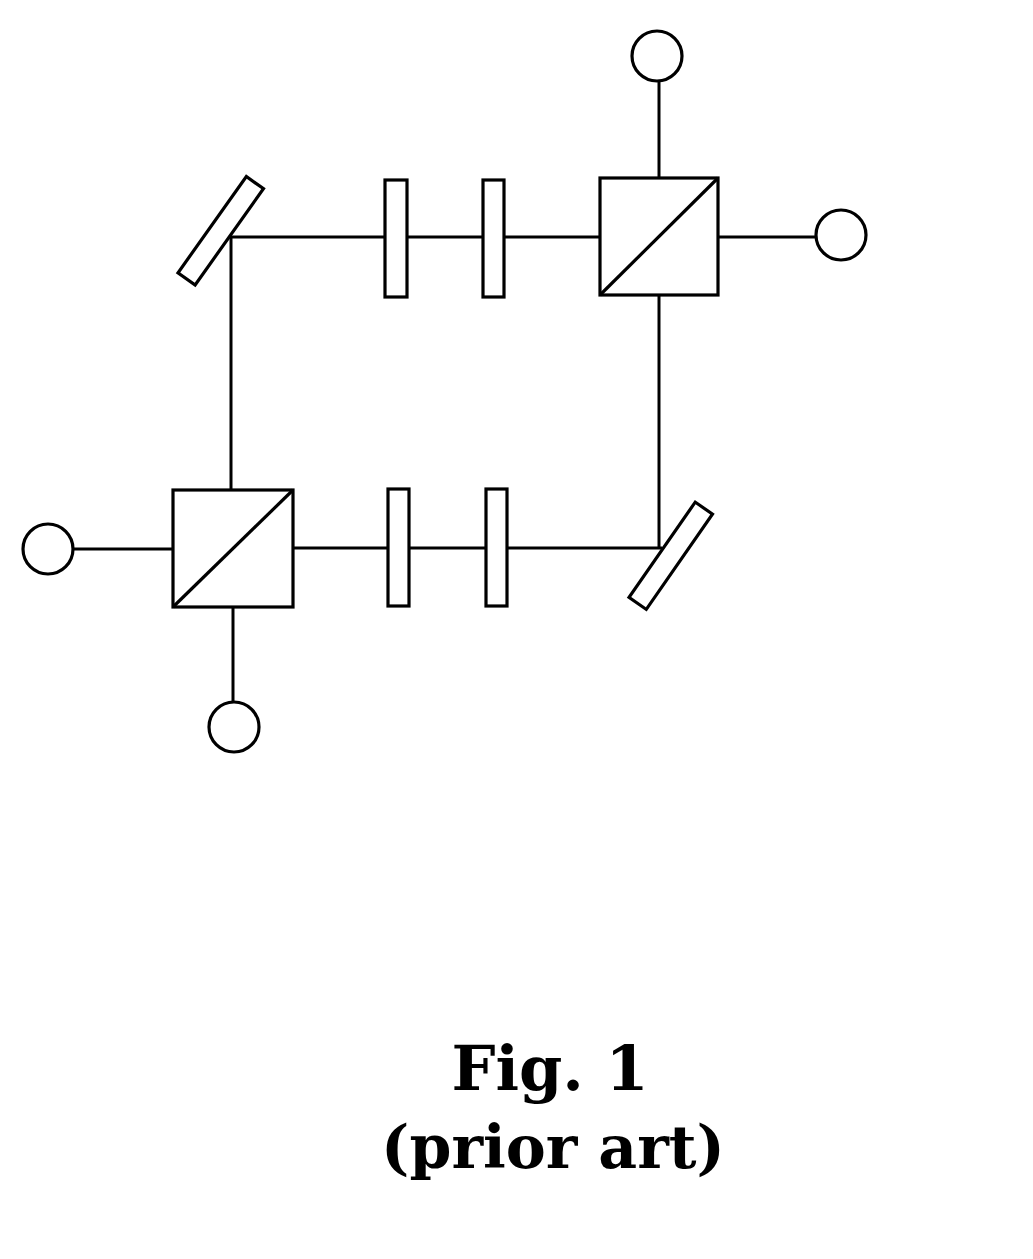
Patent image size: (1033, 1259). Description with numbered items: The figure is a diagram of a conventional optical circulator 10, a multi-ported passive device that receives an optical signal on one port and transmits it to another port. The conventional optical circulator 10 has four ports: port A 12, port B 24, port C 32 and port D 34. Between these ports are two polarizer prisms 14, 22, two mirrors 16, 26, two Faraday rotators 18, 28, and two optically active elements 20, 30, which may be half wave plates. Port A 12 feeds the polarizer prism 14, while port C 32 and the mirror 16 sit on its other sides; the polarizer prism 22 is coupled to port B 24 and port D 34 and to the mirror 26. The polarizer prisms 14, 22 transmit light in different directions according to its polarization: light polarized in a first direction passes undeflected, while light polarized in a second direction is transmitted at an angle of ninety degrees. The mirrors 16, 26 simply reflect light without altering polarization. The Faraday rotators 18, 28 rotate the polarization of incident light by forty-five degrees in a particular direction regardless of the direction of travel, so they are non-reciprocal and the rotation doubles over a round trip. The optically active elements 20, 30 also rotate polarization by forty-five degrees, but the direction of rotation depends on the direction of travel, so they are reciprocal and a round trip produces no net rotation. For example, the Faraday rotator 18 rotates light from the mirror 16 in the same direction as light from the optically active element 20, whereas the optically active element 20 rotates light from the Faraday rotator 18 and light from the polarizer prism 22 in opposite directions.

The conventional optical circulator 10 is at (112, 367).
The port A 12 is at (63, 527).
The polarizer prism 14 is at (248, 488).
The mirror 16 is at (257, 181).
The Faraday rotator 18 is at (398, 179).
The optically active element 20 is at (495, 179).
The polarizer prism 22 is at (677, 176).
The port B 24 is at (864, 221).
The mirror 26 is at (708, 506).
The Faraday rotator 28 is at (498, 488).
The optically active element 30 is at (402, 488).
The port C 32 is at (254, 710).
The port D 34 is at (672, 33).